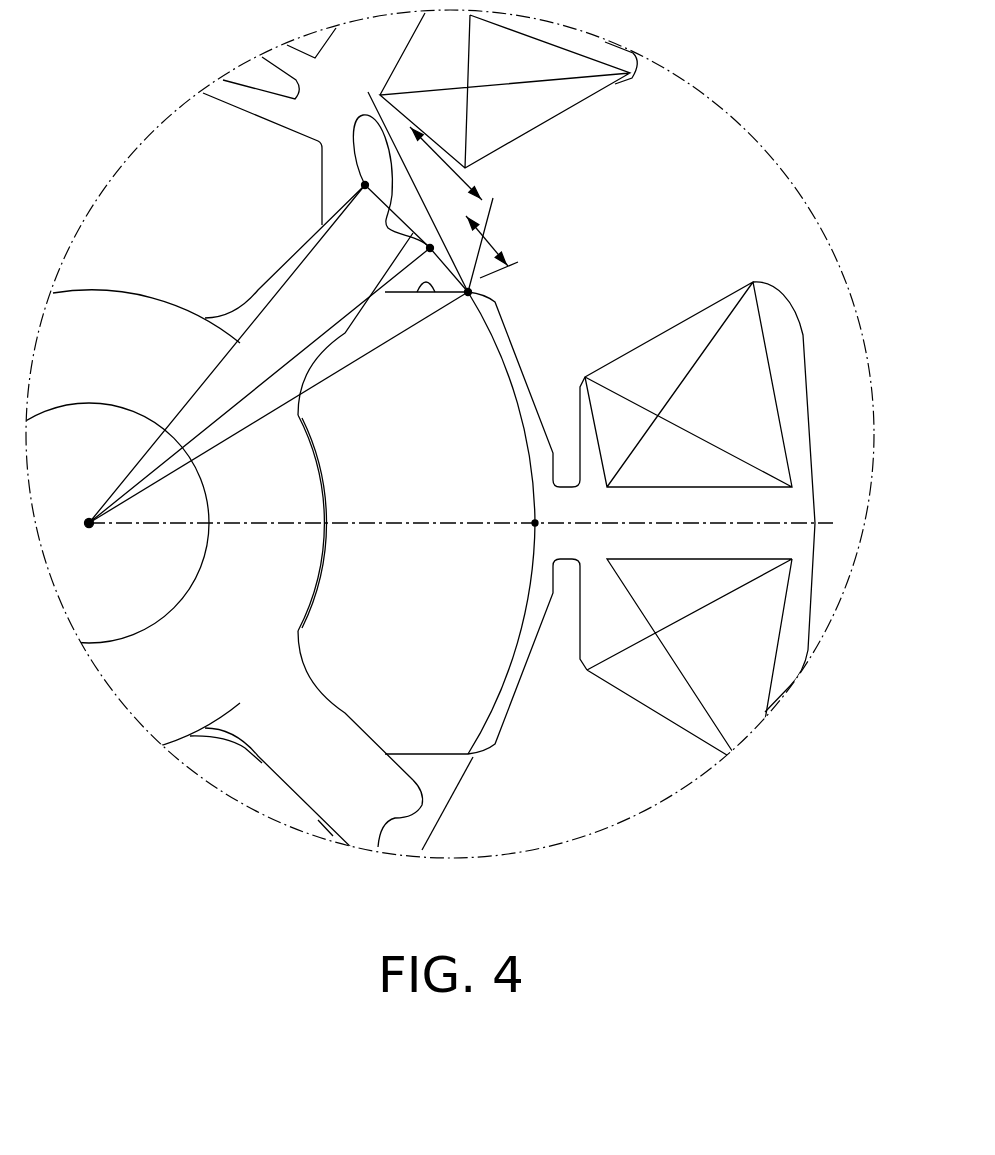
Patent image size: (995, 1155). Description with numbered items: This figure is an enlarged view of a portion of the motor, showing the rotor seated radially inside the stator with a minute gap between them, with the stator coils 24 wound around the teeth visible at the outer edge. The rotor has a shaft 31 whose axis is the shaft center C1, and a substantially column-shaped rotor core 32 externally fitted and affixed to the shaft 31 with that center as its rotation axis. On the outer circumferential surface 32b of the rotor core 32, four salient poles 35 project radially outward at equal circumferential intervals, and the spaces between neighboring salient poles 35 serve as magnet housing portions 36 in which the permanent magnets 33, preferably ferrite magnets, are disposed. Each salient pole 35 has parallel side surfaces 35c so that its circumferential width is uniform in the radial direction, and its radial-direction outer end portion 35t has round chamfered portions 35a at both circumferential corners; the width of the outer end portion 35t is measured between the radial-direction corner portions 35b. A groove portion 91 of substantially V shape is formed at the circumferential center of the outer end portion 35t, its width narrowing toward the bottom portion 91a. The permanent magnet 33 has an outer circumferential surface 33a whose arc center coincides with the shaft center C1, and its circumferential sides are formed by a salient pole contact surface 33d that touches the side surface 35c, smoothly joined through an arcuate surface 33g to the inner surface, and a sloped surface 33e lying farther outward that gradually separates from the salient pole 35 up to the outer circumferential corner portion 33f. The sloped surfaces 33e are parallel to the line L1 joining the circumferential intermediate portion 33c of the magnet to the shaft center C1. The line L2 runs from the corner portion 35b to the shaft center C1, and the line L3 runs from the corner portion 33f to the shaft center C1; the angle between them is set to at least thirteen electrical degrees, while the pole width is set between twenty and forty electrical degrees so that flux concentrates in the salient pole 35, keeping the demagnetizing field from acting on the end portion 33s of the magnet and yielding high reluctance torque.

The coil 24 is at (768, 390).
The shaft 31 is at (206, 592).
The rotor core 32 is at (307, 577).
The outer circumferential surface of the rotor core 32b is at (323, 557).
The permanent magnet 33 is at (740, 722).
The outer circumferential surface of the permanent magnet 33a is at (533, 457).
The circumferential intermediate portion of the permanent magnet 33c is at (537, 523).
The salient pole contact surface 33d is at (352, 352).
The sloped surface 33e is at (435, 294).
The outer circumferential corner portion 33f is at (512, 345).
The end portion of the permanent magnet 33s is at (519, 358).
The arcuate surface 33g is at (298, 420).
The salient pole 35 is at (258, 283).
The round chamfered portion 35a is at (352, 152).
The radial-direction corner portion of the salient pole 35b is at (353, 152).
The side surface of the salient pole 35c is at (362, 184).
The radial-direction outer end portion of the salient pole 35t is at (395, 203).
The magnet housing portion 36 is at (324, 480).
The groove portion 91 is at (412, 177).
The bottom portion of the groove portion 91a is at (330, 225).
The line L1 is at (833, 523).
The line L2 is at (250, 393).
The line L3 is at (250, 425).
The shaft center C1 is at (92, 530).